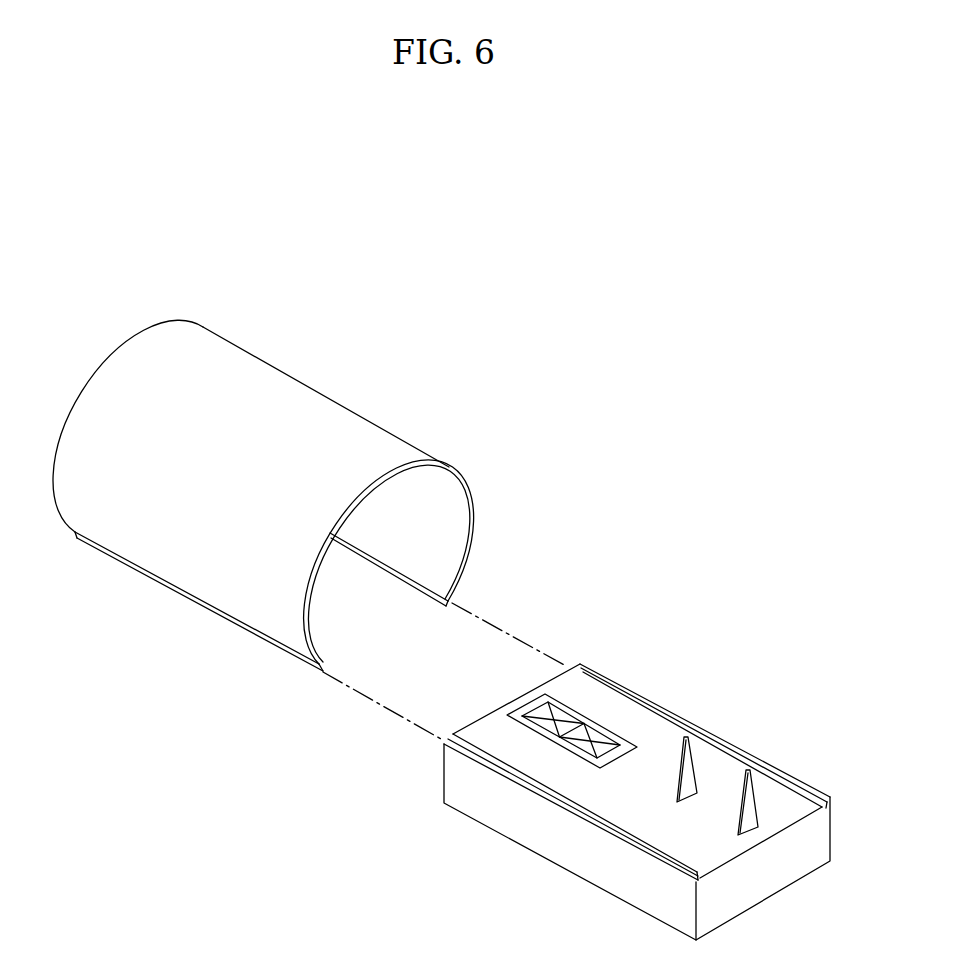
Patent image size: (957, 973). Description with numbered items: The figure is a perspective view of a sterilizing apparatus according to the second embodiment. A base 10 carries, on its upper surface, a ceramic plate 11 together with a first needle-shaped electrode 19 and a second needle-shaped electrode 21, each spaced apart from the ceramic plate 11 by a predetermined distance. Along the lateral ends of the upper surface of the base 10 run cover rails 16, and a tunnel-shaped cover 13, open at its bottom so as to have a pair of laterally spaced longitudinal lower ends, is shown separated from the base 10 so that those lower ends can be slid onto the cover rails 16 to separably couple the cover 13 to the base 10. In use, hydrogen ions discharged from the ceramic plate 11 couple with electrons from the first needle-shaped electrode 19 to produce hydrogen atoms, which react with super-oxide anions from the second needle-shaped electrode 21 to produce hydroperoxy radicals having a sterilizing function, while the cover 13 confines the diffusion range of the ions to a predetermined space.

The base 10 is at (600, 873).
The ceramic plate 11 is at (582, 722).
The cover 13 is at (293, 402).
The cover rails 16 is at (700, 880).
The first needle-shaped electrode 19 is at (699, 768).
The second needle-shaped electrode 21 is at (758, 803).